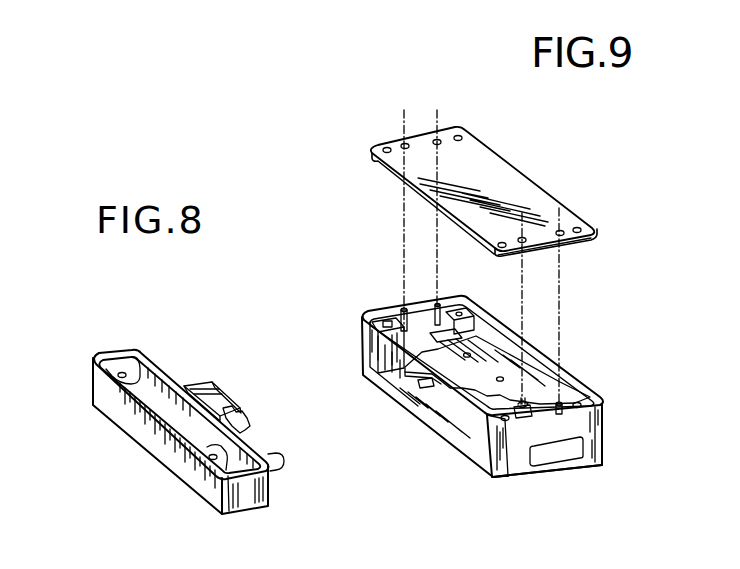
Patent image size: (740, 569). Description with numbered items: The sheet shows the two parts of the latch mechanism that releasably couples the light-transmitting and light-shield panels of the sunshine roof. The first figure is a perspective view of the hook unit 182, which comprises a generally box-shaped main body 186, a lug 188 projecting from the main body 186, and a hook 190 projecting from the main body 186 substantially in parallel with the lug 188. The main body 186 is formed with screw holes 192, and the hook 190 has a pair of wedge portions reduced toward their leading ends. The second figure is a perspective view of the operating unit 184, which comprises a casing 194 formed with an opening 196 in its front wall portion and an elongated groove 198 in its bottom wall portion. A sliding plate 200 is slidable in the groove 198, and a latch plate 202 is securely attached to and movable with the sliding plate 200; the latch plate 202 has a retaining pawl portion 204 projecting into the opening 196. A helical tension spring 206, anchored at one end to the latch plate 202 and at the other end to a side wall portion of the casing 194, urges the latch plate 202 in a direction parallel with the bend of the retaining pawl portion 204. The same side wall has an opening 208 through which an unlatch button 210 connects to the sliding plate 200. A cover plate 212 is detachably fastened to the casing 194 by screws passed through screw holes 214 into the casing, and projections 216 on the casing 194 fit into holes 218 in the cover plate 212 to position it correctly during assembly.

In FIG. 8, the hook unit 182 is at (226, 392).
In FIG. 9, the operating unit 184 is at (392, 217).
In FIG. 8, the main body 186 is at (148, 455).
In FIG. 8, the lug 188 is at (274, 456).
In FIG. 8, the hook 190 is at (248, 421).
In FIG. 8, the screw holes 192 is at (118, 375).
In FIG. 9, the casing 194 is at (358, 338).
In FIG. 9, the opening 196 is at (490, 455).
In FIG. 9, the elongated groove 198 is at (406, 309).
In FIG. 9, the sliding plate 200 is at (463, 313).
In FIG. 9, the latch plate 202 is at (455, 380).
In FIG. 9, the retaining pawl portion 204 is at (430, 372).
In FIG. 9, the helical tension spring 206 is at (535, 405).
In FIG. 9, the opening 208 is at (540, 458).
In FIG. 9, the unlatch button 210 is at (562, 471).
In FIG. 9, the cover plate 212 is at (518, 173).
In FIG. 9, the screw holes 214 is at (385, 146).
In FIG. 9, the projections 216 is at (385, 321).
In FIG. 9, the holes 218 is at (436, 142).